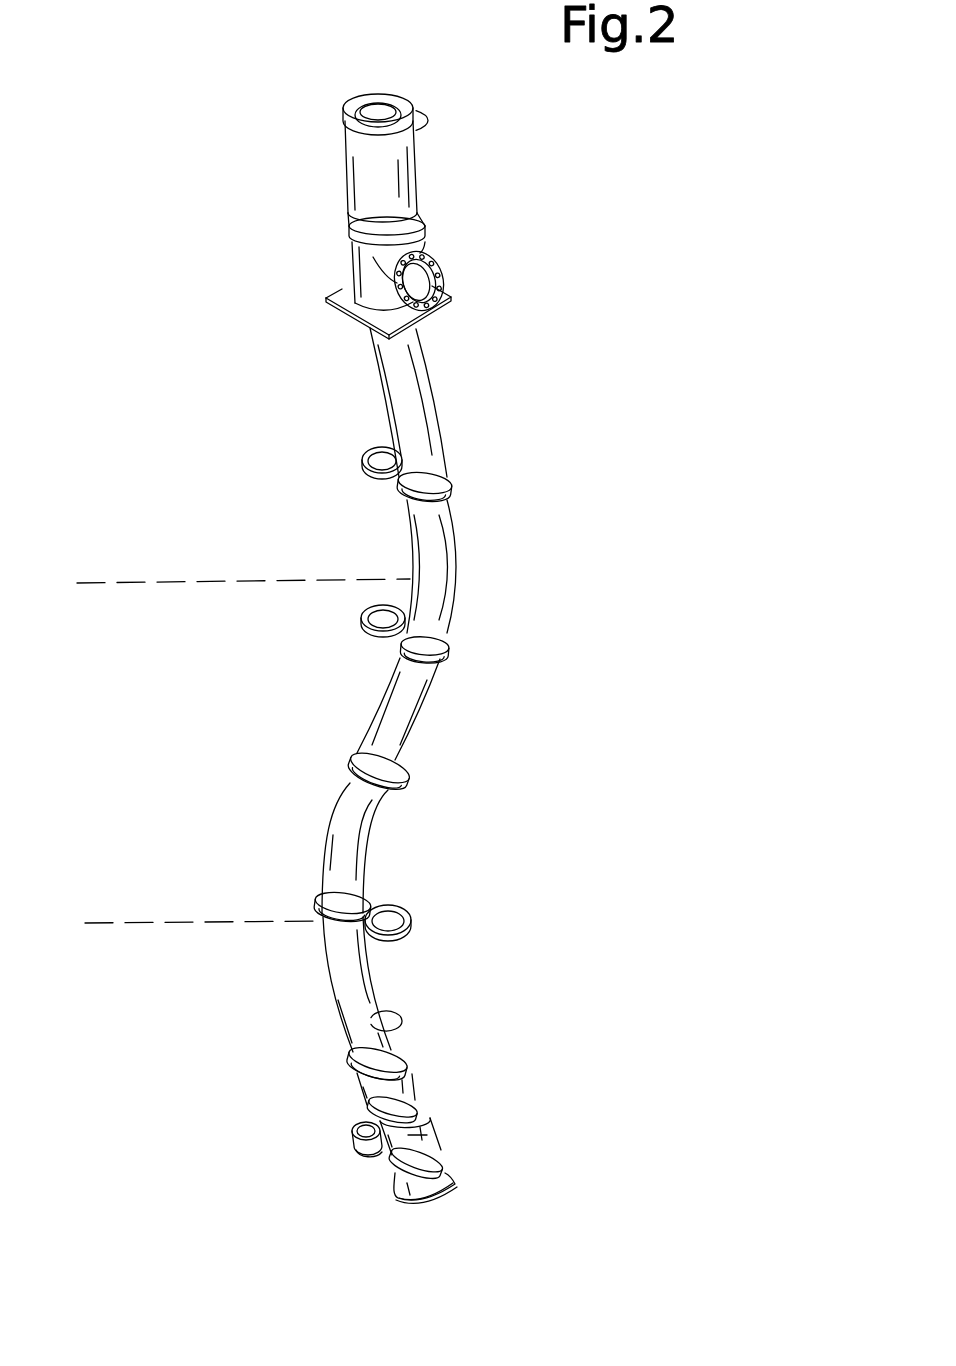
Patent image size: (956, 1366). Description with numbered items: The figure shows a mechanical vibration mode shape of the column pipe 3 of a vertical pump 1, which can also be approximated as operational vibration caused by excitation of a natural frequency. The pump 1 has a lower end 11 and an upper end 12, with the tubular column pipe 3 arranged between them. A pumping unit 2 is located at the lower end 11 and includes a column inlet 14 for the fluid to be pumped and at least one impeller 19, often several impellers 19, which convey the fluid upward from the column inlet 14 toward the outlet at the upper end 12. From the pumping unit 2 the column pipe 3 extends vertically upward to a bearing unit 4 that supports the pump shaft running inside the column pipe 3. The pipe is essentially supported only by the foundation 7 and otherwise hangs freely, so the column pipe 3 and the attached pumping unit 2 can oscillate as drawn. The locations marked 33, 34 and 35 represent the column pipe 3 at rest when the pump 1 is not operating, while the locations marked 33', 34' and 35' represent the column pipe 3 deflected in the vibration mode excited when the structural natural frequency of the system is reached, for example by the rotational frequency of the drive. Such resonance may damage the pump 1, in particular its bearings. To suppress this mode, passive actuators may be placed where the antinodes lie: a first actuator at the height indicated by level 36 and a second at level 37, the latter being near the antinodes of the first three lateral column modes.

The vertical pump 1 is at (563, 300).
The pumping unit 2 is at (421, 1073).
The column pipe 3 is at (457, 577).
The bearing unit 4 is at (402, 178).
The foundation 7 is at (442, 300).
The lower end 11 is at (392, 1210).
The upper end 12 is at (468, 270).
The column inlet 14 is at (457, 1182).
The impeller 19 is at (365, 1092).
The location of the column pipe at rest 33 is at (340, 456).
The location of the column pipe in vibration mode 33' is at (463, 478).
The location of the column pipe at rest 34 is at (351, 614).
The location of the column pipe in vibration mode 34' is at (461, 657).
The location of the column pipe at rest 35 is at (419, 908).
The location of the column pipe in vibration mode 35' is at (309, 891).
The level 36 is at (98, 583).
The level 37 is at (102, 923).